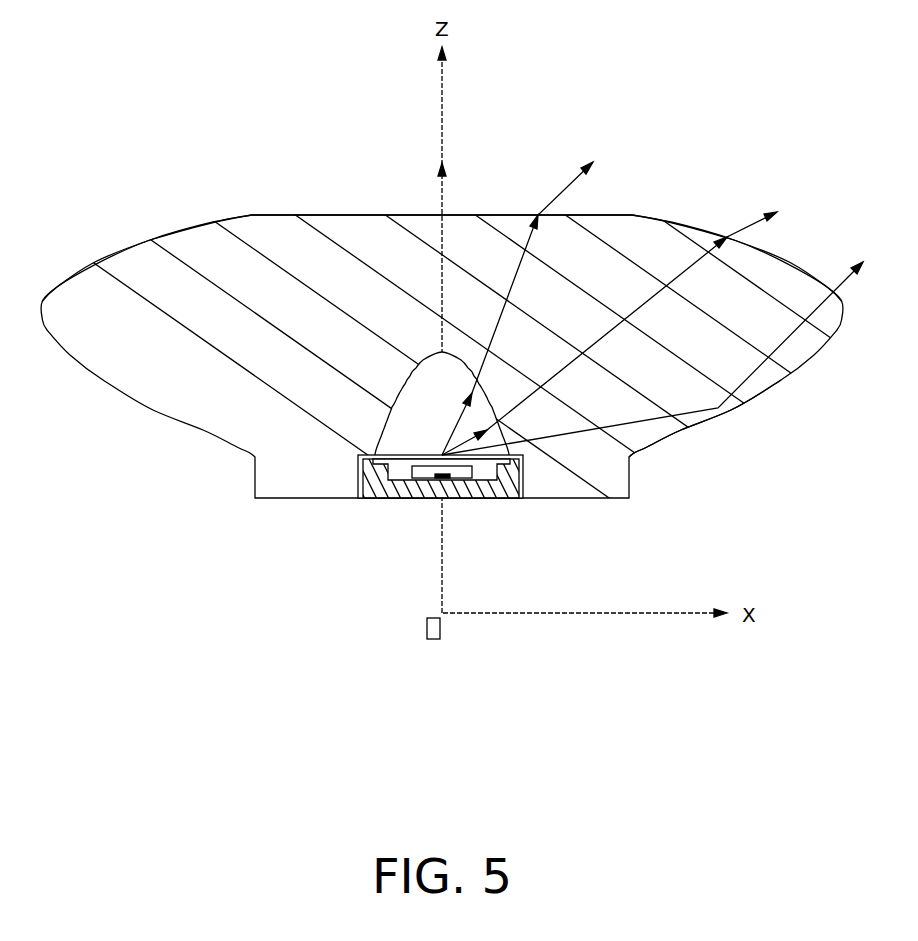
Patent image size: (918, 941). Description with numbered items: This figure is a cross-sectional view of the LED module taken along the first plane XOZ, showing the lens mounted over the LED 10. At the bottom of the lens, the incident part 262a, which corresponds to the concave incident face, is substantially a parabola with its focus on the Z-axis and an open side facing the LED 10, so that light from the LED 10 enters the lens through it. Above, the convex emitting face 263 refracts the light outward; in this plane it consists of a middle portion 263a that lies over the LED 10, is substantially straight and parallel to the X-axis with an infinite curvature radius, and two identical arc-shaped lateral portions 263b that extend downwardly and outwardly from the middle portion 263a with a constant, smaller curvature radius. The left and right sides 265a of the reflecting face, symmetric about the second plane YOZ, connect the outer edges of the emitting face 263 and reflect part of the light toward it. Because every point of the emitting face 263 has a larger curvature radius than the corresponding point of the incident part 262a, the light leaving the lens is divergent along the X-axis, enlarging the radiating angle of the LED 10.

The LED 10 is at (477, 478).
The incident part 262a is at (393, 430).
The emitting face 263 is at (768, 255).
The middle portion 263a is at (632, 213).
The lateral portions 263b is at (250, 210).
The left and right sides 265a is at (667, 445).